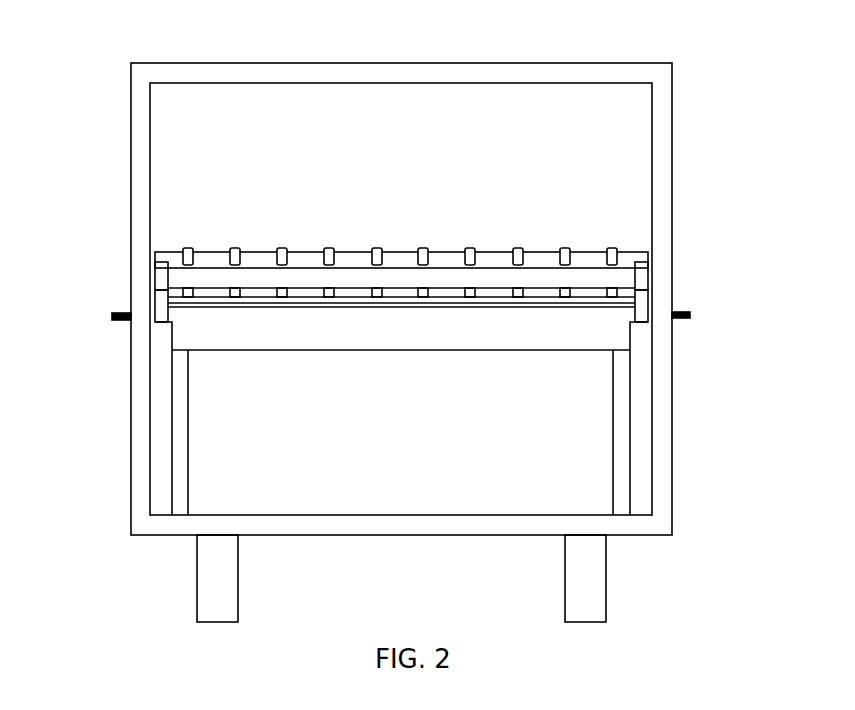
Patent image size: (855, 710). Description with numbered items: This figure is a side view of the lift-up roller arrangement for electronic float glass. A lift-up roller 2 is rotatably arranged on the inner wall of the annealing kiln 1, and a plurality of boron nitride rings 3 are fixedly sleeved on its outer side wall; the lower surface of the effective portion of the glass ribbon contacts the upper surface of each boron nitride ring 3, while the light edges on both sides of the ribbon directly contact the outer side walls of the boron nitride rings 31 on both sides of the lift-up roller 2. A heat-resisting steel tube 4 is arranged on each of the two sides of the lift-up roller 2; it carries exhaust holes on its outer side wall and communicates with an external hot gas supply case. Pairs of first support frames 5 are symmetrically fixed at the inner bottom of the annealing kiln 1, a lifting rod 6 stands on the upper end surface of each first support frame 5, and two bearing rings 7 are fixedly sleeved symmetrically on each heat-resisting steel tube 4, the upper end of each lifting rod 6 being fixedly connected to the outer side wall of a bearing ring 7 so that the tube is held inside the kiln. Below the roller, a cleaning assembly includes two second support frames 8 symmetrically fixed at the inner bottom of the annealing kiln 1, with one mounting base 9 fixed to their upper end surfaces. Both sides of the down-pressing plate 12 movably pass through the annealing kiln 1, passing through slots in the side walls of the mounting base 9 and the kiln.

The annealing kiln 1 is at (447, 75).
The lift-up roller 2 is at (392, 258).
The boron nitride ring 3 is at (518, 255).
The boron nitride rings on both sides 31 is at (187, 252).
The heat-resisting steel tube 4 is at (497, 278).
The first support frame 5 is at (160, 408).
The lifting rod 6 is at (156, 320).
The bearing ring 7 is at (165, 283).
The second support frame 8 is at (182, 467).
The mounting base 9 is at (313, 335).
The down-pressing plate 12 is at (690, 315).